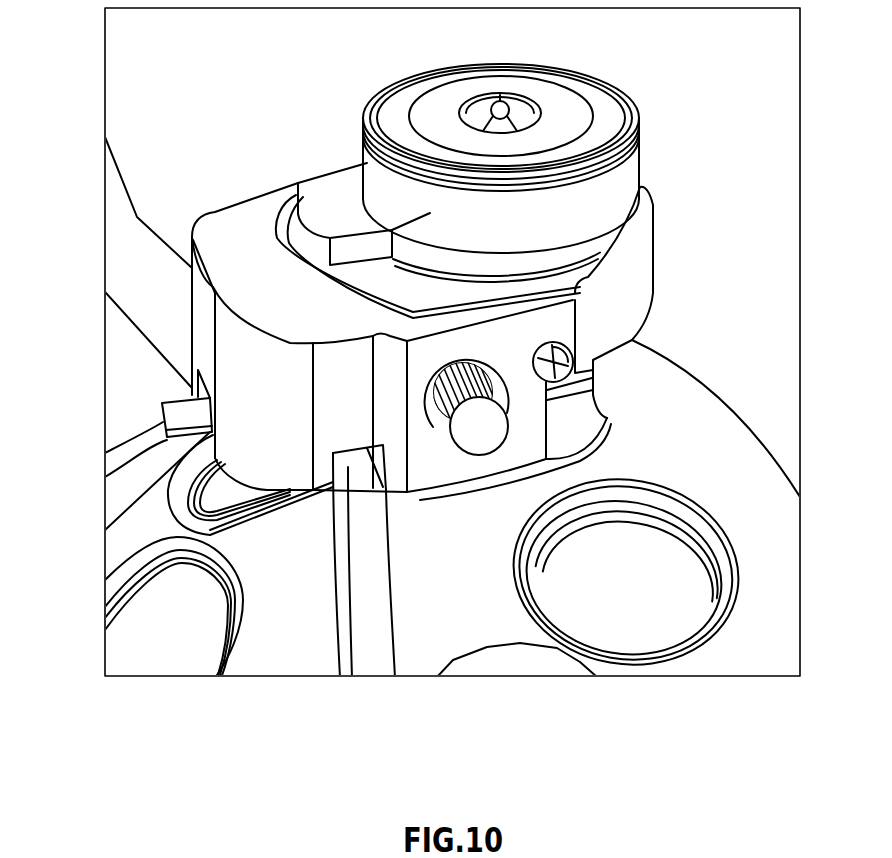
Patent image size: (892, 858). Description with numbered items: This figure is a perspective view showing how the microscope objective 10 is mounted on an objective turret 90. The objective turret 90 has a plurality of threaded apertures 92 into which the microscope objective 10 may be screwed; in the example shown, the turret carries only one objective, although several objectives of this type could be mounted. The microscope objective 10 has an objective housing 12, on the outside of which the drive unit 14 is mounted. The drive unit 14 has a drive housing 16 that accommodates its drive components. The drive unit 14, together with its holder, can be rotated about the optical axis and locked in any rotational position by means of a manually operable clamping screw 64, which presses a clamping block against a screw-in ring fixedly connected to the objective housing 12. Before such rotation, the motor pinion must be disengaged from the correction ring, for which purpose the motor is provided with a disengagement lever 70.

The microscope objective 10 is at (708, 188).
The objective housing 12 is at (588, 393).
The drive unit 14 is at (190, 190).
The drive housing 16 is at (240, 230).
The clamping screw 64 is at (467, 442).
The disengagement lever 70 is at (163, 414).
The objective turret 90 is at (270, 653).
The threaded apertures 92 is at (650, 522).